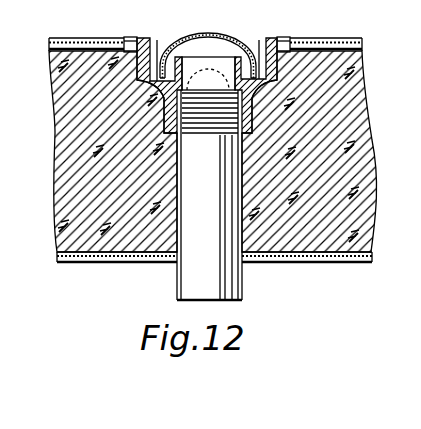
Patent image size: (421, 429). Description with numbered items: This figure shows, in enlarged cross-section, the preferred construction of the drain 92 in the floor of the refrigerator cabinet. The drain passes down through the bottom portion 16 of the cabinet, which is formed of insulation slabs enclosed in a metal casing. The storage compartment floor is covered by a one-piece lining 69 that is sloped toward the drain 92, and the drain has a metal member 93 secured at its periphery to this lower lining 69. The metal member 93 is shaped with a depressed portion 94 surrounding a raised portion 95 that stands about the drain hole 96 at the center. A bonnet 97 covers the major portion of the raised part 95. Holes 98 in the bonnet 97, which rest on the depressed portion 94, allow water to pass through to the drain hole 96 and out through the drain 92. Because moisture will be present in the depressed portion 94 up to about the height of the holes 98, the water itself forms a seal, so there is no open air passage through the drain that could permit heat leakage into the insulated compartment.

The bottom portion 16 is at (357, 100).
The one-piece lining 69 is at (330, 40).
The drain 92 is at (227, 286).
The metal member 93 is at (294, 44).
The depressed portion 94 is at (152, 41).
The raised portion 95 is at (181, 44).
The drain hole 96 is at (213, 63).
The bonnet 97 is at (205, 27).
The holes 98 is at (265, 56).